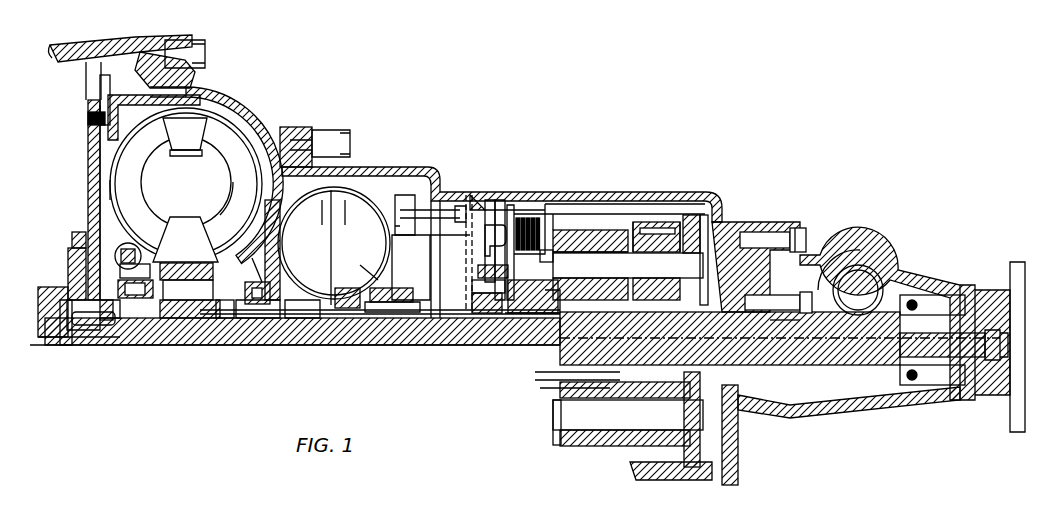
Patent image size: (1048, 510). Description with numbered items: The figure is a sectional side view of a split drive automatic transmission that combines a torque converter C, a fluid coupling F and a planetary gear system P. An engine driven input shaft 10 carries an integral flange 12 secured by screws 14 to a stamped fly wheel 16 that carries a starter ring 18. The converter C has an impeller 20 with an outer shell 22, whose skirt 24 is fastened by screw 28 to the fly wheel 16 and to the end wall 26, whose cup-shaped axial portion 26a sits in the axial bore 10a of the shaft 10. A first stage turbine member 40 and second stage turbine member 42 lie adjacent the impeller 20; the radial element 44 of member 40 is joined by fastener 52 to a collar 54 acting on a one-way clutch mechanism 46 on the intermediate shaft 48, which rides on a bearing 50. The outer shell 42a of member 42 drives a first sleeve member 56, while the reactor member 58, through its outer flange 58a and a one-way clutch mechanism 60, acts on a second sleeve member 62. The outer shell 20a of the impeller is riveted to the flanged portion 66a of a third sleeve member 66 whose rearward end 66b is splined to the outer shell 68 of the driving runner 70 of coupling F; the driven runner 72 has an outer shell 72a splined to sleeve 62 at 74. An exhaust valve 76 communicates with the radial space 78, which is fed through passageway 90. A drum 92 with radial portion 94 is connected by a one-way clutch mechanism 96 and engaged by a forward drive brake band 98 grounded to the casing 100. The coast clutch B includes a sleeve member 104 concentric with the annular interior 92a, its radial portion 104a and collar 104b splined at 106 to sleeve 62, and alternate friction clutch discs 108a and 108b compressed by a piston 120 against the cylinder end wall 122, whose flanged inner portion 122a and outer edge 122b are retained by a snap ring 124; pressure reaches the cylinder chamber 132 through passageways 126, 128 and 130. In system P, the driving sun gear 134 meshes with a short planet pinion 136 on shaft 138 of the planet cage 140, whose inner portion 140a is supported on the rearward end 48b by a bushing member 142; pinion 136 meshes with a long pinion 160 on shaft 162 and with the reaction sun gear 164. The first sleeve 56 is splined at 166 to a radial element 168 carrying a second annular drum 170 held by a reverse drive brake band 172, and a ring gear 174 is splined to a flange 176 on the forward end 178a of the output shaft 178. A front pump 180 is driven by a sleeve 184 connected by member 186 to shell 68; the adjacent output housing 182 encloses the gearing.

The input shaft 10 is at (42, 292).
The axial bore 10a is at (60, 300).
The flange 12 is at (75, 240).
The screws 14 is at (70, 258).
The fly wheel 16 is at (88, 183).
The starter ring 18 is at (88, 64).
The impeller 20 is at (197, 182).
The outer shell of impeller 20a is at (268, 213).
The outer shell 22 is at (250, 112).
The skirt 24 is at (105, 95).
The end wall 26 is at (90, 163).
The cup-shaped axial portion 26a is at (60, 337).
The screw 28 is at (86, 116).
The first stage turbine member 40 is at (185, 137).
The second stage turbine member 42 is at (186, 184).
The outer shell of second stage turbine member 42a is at (110, 197).
The radial element 44 is at (106, 141).
The one-way clutch mechanism 46 is at (135, 289).
The intermediate shaft 48 is at (130, 340).
The rearward end of intermediate shaft 48b is at (855, 365).
The bearing 50 is at (106, 333).
The fastener 52 is at (133, 248).
The collar 54 is at (135, 271).
The first sleeve member 56 is at (181, 320).
The reactor member 58 is at (185, 239).
The outer flange of reactor 58a is at (188, 268).
The one-way clutch mechanism 60 is at (188, 290).
The second sleeve member 62 is at (222, 318).
The third sleeve member 66 is at (242, 318).
The flanged portion 66a is at (240, 278).
The rearward end of third sleeve member 66b is at (310, 320).
The outer shell of driving runner 68 is at (300, 282).
The driving runner 70 is at (334, 243).
The driven runner 72 is at (334, 243).
The outer shell of driven runner 72a is at (355, 222).
The spline connection 74 is at (348, 312).
The exhaust valve 76 is at (405, 175).
The radial space 78 is at (325, 216).
The passageway 90 is at (330, 312).
The drum 92 is at (500, 212).
The annular interior of drum 92a is at (555, 202).
The radially extending portion 94 is at (478, 196).
The one-way clutch mechanism 96 is at (475, 318).
The forward drive brake band 98 is at (522, 215).
The transmission casing 100 is at (432, 168).
The sleeve member 104 is at (548, 272).
The radial portion 104a is at (520, 312).
The collar 104b is at (540, 312).
The spline connection 106 is at (556, 306).
The friction clutch discs 108a is at (532, 214).
The friction clutch discs 108b is at (548, 257).
The piston 120 is at (504, 195).
The cylinder end wall 122 is at (600, 218).
The flanged inner portion 122a is at (575, 292).
The outer edge 122b is at (560, 216).
The snap ring 124 is at (626, 205).
The passageway 126 is at (464, 206).
The passageway 128 is at (476, 272).
The passageway 130 is at (488, 286).
The cylinder chamber 132 is at (484, 238).
The driving sun gear 134 is at (650, 392).
The short planet pinion 136 is at (670, 232).
The shaft 138 is at (702, 258).
The planet cage 140 is at (732, 238).
The sleeve shaped inner portion 140a is at (785, 312).
The bushing member 142 is at (694, 392).
The long pinion 160 is at (592, 450).
The shaft 162 is at (560, 430).
The reaction sun gear 164 is at (628, 263).
The spline 166 is at (588, 362).
The radial element 168 is at (648, 270).
The second annular drum 170 is at (652, 222).
The reverse drive brake band 172 is at (628, 224).
The ring gear 174 is at (700, 205).
The flange 176 is at (740, 440).
The output shaft 178 is at (860, 365).
The forward end of output shaft 178a is at (800, 318).
The front pump 180 is at (450, 250).
The output housing 182 is at (790, 382).
The sleeve 184 is at (402, 312).
The member 186 is at (358, 267).
The coast clutch B is at (530, 149).
The torque converter C is at (271, 51).
The fluid coupling F is at (381, 141).
The planetary gear system P is at (687, 160).